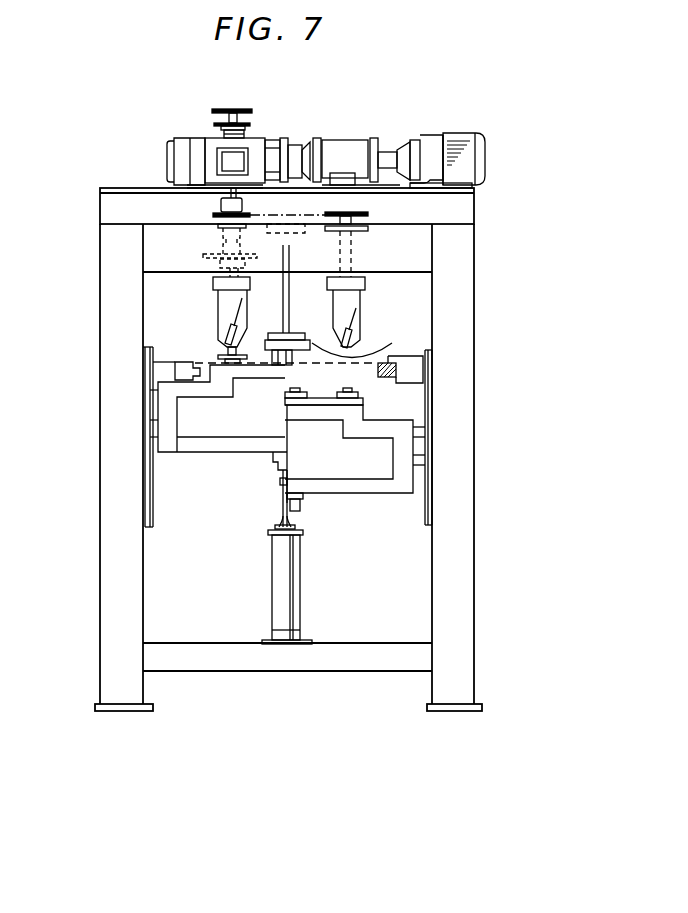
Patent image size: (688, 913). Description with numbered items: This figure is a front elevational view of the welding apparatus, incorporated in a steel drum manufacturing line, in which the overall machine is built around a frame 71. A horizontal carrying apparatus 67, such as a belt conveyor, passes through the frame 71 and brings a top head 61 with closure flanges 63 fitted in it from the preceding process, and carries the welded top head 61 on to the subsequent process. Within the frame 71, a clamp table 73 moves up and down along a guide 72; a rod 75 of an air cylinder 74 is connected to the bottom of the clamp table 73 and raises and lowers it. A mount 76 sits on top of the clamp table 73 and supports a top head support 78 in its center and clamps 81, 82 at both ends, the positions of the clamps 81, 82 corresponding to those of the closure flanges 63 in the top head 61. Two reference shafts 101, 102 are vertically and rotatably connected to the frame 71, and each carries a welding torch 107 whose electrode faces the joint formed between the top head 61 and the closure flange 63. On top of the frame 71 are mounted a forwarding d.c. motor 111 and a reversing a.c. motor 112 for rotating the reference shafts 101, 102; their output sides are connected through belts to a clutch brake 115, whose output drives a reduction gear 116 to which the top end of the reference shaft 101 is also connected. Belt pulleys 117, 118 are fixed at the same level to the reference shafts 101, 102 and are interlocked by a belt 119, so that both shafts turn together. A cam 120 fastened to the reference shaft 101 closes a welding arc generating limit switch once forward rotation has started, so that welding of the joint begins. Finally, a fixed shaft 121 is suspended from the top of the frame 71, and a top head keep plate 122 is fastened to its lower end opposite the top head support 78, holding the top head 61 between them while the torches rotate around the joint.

The top head 61 is at (287, 365).
The closure flanges 63 is at (355, 367).
The carrying apparatus 67 is at (180, 363).
The frame 71 is at (463, 291).
The guide 72 is at (434, 507).
The clamp table 73 is at (310, 413).
The air cylinder 74 is at (283, 577).
The rod 75 is at (282, 525).
The mount 76 is at (330, 407).
The top head support 78 is at (288, 398).
The clamp 81 is at (222, 372).
The clamp 82 is at (382, 428).
The reference shaft 101 is at (214, 287).
The reference shaft 102 is at (352, 247).
The welding torch 107 is at (227, 337).
The forwarding d.c. motor 111 is at (180, 145).
The reversing a.c. motor 112 is at (460, 134).
The clutch brake 115 is at (352, 142).
The reduction gear 116 is at (214, 146).
The belt pulley 117 is at (217, 214).
The belt pulley 118 is at (365, 213).
The belt 119 is at (302, 215).
The cam 120 is at (249, 109).
The fixed shaft 121 is at (288, 288).
The top head keep plate 122 is at (357, 350).